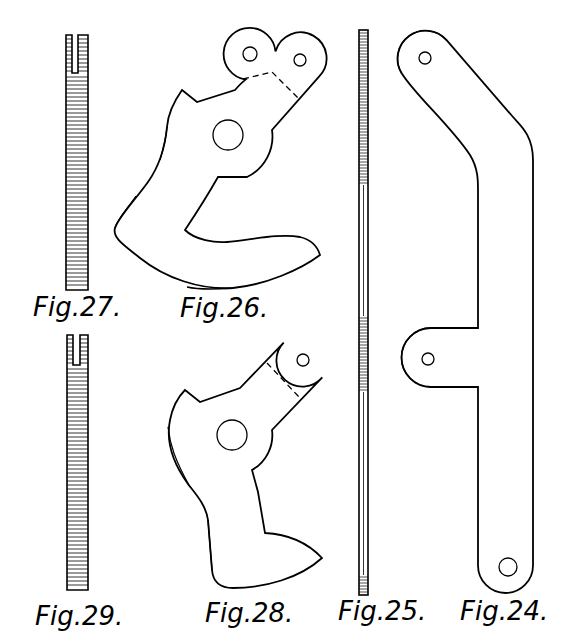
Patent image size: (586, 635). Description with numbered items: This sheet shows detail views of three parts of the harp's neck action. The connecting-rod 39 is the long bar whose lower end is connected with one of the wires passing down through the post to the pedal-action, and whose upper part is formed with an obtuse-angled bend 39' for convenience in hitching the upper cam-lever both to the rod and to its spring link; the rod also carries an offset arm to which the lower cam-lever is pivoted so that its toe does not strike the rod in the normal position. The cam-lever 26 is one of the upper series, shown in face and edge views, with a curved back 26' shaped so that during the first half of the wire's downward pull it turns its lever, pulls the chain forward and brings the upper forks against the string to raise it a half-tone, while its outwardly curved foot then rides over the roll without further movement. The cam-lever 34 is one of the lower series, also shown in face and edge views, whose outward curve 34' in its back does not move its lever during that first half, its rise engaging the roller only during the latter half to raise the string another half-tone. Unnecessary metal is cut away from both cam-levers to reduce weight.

In FIG. 27, the cam-lever 26 is at (49, 162).
In FIG. 26, the cam-lever 26 is at (221, 158).
In FIG. 26, the back of the cam-lever 26' is at (136, 156).
In FIG. 29, the cam-lever 34 is at (49, 462).
In FIG. 28, the cam-lever 34 is at (241, 465).
In FIG. 28, the outward curve in the back of the cam-lever 34' is at (153, 457).
In FIG. 25, the connecting-rod 39 is at (385, 312).
In FIG. 24, the connecting-rod 39 is at (485, 312).
In FIG. 24, the obtuse-angled bend 39' is at (458, 48).